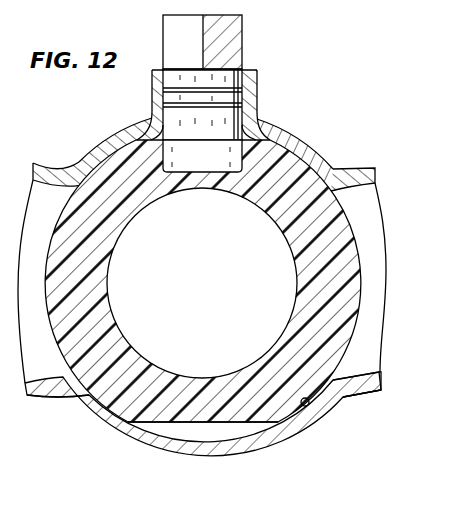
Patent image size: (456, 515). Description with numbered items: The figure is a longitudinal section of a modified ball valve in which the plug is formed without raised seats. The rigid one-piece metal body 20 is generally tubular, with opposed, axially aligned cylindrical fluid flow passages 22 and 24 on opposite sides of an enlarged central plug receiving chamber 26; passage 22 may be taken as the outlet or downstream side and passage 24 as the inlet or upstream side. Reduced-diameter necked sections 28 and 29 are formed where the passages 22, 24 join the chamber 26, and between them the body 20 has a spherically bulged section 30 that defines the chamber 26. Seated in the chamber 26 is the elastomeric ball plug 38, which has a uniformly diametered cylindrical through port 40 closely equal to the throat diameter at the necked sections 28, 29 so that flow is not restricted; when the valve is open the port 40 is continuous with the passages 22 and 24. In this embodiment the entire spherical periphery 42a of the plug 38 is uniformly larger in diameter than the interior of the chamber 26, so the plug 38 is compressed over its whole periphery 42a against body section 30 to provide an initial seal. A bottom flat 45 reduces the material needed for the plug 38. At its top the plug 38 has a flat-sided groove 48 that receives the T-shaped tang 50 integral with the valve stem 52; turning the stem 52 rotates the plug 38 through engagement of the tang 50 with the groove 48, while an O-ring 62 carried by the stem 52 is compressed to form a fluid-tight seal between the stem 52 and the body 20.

The body 20 is at (335, 145).
The fluid flow passage 22 is at (384, 373).
The fluid flow passage 24 is at (35, 382).
The plug receiving cavity or chamber 26 is at (306, 406).
The necked section 28 is at (344, 398).
The necked section 29 is at (61, 399).
The spherically bulged section 30 is at (261, 447).
The ball plug 38 is at (358, 229).
The through port 40 is at (133, 214).
The spherical periphery 42a is at (361, 297).
The bottom flat 45 is at (193, 424).
The groove 48 is at (187, 173).
The tang 50 is at (230, 158).
The valve stem 52 is at (238, 40).
The O-ring 62 is at (240, 98).